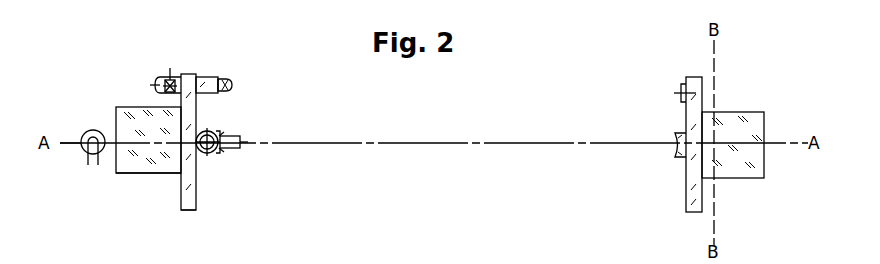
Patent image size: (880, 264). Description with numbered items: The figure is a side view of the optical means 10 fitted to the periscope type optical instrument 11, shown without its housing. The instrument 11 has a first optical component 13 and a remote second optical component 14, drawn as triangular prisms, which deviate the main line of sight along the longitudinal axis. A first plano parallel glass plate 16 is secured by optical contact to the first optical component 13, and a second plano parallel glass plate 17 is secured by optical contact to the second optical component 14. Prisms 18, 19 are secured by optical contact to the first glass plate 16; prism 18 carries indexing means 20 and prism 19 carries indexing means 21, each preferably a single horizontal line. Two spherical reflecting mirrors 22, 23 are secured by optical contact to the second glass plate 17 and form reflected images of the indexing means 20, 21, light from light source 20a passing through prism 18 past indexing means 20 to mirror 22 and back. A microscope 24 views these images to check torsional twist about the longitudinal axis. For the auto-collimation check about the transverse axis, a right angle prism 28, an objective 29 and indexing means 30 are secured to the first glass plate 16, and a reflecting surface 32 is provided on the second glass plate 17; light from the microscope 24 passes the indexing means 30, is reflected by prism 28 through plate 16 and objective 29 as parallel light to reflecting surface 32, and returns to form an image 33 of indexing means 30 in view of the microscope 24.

The optical means 10 is at (190, 73).
The periscope type optical instrument 11 is at (131, 177).
The first optical component 13 is at (126, 119).
The second optical component 14 is at (722, 178).
The first plano parallel glass plate 16 is at (188, 212).
The second plano parallel glass plate 17 is at (693, 214).
The prism 18 is at (232, 150).
The prism 19 is at (218, 142).
The indexing means 20 is at (241, 135).
The indexing means 21 is at (221, 150).
The light source 20a is at (84, 150).
The spherical reflecting mirror 22 is at (678, 160).
The spherical reflecting mirror 23 is at (680, 145).
The microscope 24 is at (212, 160).
The right angle prism 28 is at (158, 78).
The objective 29 is at (232, 86).
The indexing means 30 is at (163, 74).
The reflecting surface 32 is at (682, 88).
The image 33 is at (170, 68).